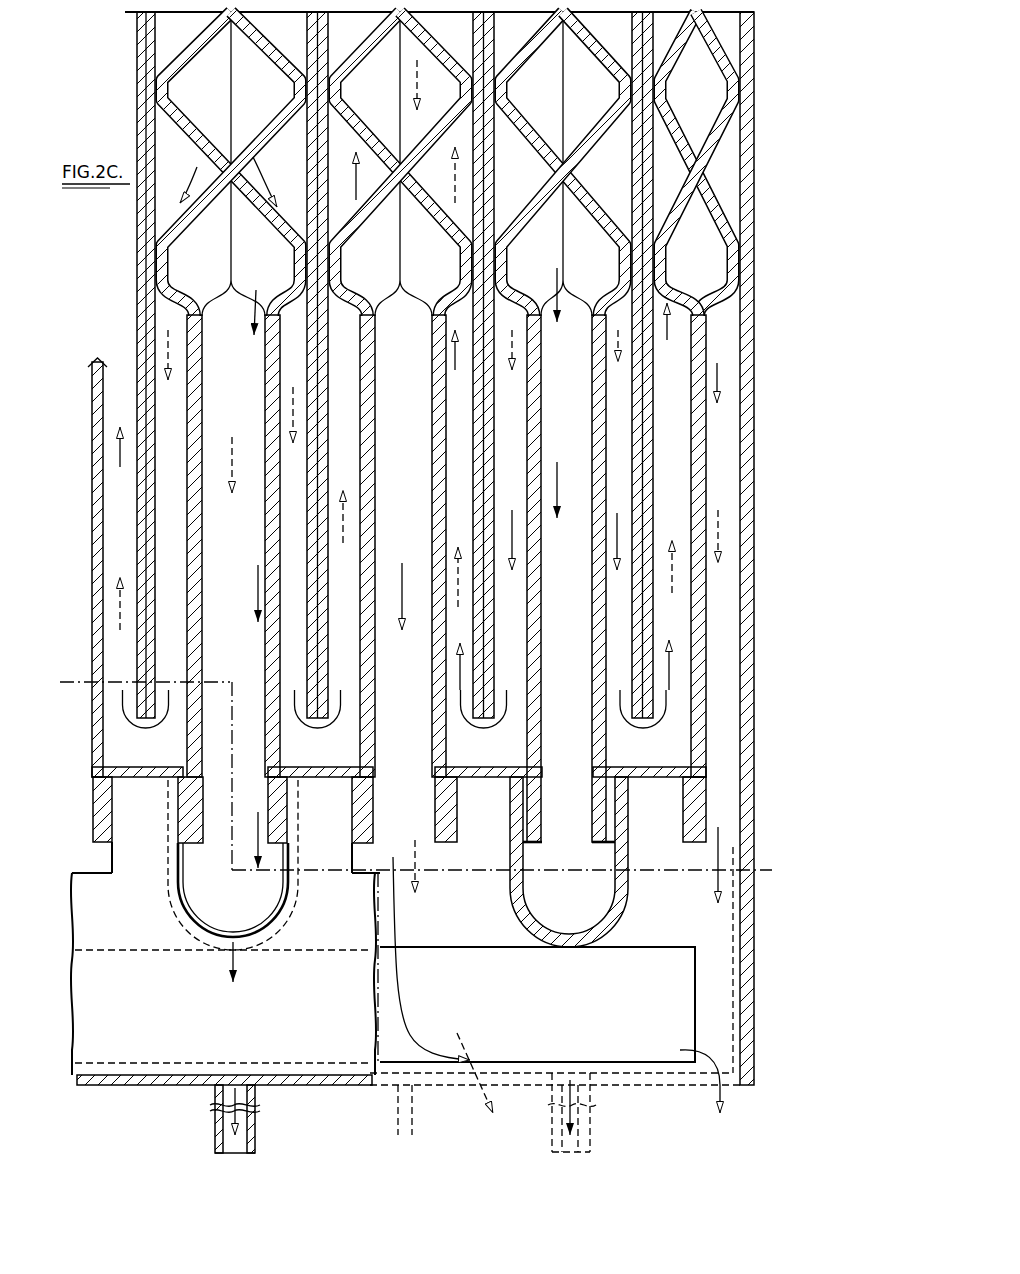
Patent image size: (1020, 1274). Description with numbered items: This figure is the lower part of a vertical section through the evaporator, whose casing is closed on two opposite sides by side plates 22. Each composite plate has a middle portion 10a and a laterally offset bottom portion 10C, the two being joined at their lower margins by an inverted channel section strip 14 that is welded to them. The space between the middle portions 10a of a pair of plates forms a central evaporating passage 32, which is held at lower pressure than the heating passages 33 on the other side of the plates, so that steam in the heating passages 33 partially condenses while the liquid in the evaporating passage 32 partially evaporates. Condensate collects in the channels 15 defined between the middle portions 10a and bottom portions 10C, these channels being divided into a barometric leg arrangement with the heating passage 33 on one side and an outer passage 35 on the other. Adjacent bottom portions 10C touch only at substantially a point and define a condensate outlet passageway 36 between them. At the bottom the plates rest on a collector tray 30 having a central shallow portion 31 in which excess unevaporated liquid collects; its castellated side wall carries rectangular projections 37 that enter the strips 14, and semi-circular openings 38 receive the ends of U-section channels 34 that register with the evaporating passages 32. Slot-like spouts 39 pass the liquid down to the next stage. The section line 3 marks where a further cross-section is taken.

The section line 3- 3 is at (60, 688).
The middle portion 10a is at (170, 477).
The bottom portion 10C is at (365, 377).
The inverted channel section strip 14 is at (140, 767).
The channel 15 is at (137, 655).
The side plate 22 is at (748, 225).
The collector tray 30 is at (753, 1052).
The central shallow portion 31 is at (180, 1082).
The central evaporating passage 32 is at (225, 507).
The heating passage 33 is at (275, 167).
The U-section channel 34 is at (167, 860).
The outer passage 35 is at (347, 170).
The condensate outlet passageway 36 is at (370, 73).
The rectangular projection 37 is at (320, 797).
The semi-circular opening 38 is at (215, 930).
The slot-like spout 39 is at (595, 1118).